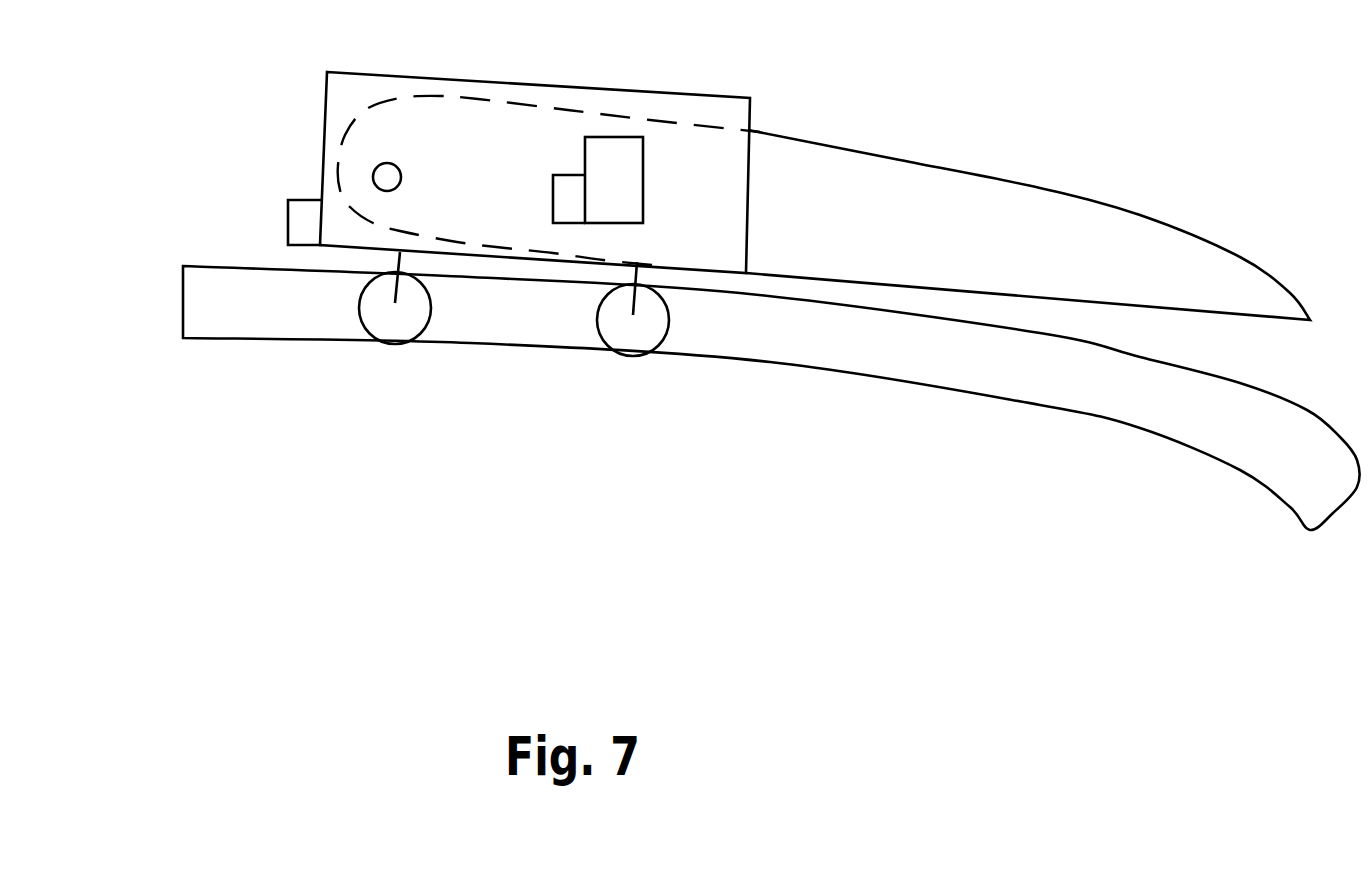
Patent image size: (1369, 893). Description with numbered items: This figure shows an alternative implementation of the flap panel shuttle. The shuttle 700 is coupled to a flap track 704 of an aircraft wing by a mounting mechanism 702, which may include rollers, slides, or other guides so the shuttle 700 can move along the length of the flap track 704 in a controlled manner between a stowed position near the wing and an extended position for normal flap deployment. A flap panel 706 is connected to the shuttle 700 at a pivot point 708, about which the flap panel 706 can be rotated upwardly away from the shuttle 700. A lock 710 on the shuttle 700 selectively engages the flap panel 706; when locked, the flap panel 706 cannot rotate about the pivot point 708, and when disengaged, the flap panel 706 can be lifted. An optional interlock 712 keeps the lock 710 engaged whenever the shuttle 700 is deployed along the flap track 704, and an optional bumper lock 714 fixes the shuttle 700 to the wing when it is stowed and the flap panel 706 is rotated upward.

The shuttle 700 is at (752, 97).
The mounting mechanism 702 is at (380, 320).
The flap track 704 is at (219, 320).
The flap panel 706 is at (945, 198).
The pivot point 708 is at (378, 172).
The lock 710 is at (598, 202).
The interlock 712 is at (572, 188).
The bumper lock 714 is at (305, 225).